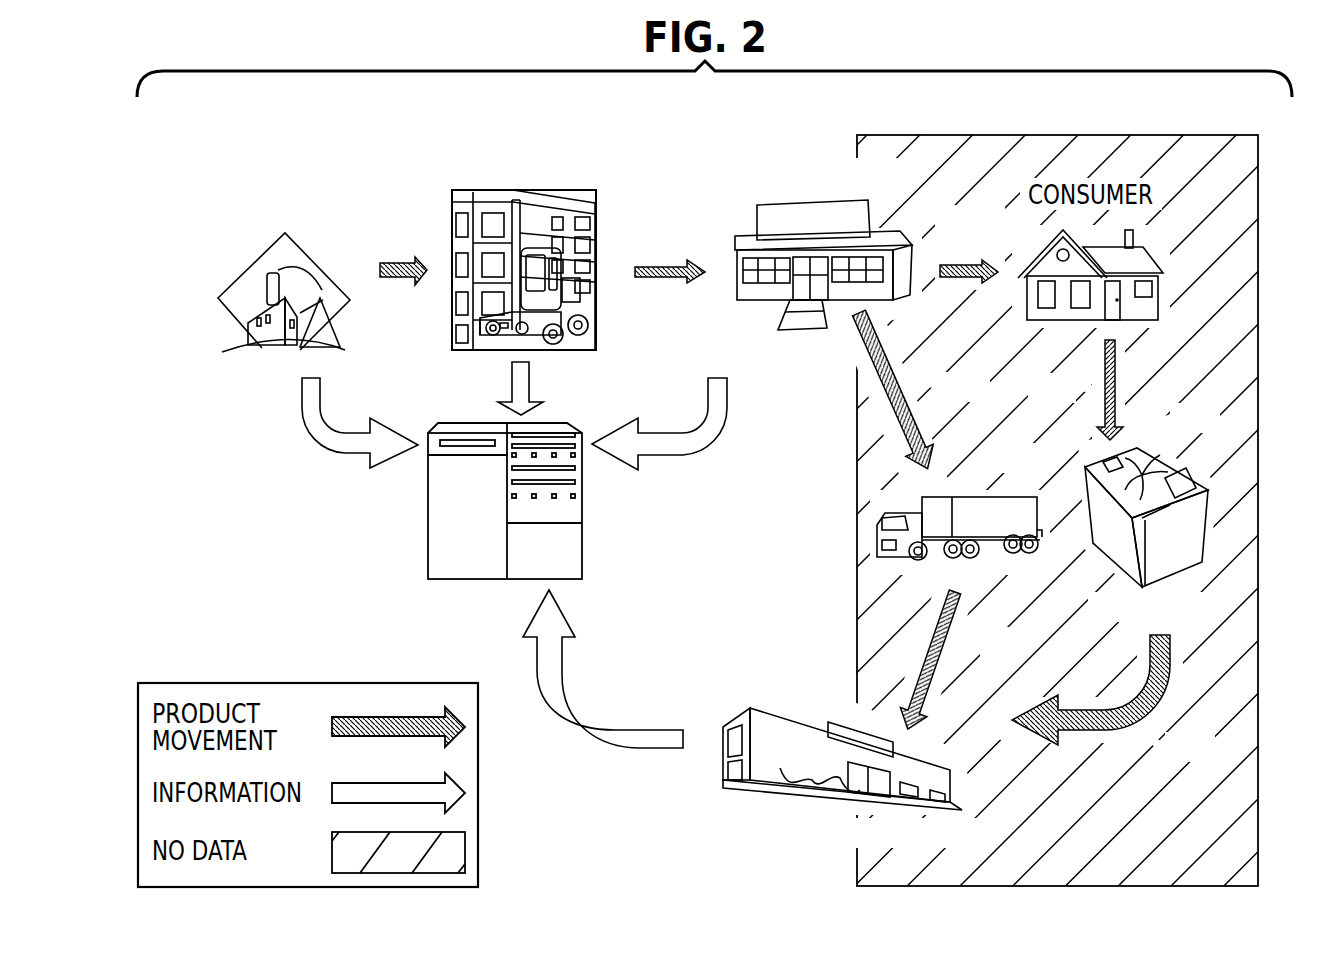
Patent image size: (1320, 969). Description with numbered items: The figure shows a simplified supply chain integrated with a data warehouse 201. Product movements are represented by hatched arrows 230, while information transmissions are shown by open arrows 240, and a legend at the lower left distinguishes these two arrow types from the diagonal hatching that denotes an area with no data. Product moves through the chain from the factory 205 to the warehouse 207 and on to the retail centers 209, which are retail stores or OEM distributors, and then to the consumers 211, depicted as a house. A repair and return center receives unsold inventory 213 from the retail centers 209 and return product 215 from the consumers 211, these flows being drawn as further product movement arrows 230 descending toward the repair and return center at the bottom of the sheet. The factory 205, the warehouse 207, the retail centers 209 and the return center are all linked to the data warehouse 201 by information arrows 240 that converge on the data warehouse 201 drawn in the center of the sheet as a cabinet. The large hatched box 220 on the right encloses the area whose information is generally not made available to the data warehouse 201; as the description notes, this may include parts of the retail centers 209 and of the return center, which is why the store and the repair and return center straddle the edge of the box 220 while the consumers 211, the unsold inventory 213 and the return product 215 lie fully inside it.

The data warehouse 201 is at (452, 580).
The factory 205 is at (265, 193).
The warehouse 207 is at (488, 155).
The retail centers 209 is at (825, 165).
The consumers 211 is at (790, 845).
The unsold inventory 213 is at (1142, 445).
The return product 215 is at (975, 498).
The box 220 is at (1085, 135).
The product movement arrows 230 is at (403, 258).
The information transmission arrows 240 is at (325, 408).